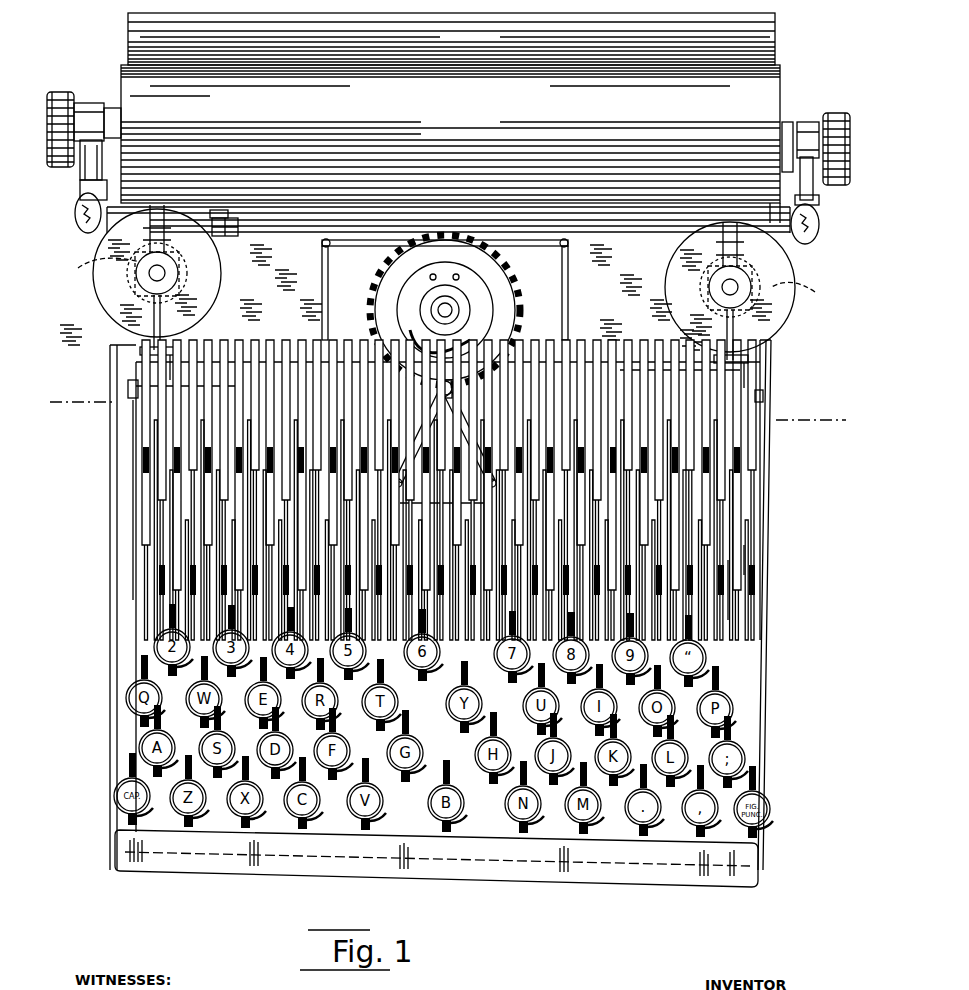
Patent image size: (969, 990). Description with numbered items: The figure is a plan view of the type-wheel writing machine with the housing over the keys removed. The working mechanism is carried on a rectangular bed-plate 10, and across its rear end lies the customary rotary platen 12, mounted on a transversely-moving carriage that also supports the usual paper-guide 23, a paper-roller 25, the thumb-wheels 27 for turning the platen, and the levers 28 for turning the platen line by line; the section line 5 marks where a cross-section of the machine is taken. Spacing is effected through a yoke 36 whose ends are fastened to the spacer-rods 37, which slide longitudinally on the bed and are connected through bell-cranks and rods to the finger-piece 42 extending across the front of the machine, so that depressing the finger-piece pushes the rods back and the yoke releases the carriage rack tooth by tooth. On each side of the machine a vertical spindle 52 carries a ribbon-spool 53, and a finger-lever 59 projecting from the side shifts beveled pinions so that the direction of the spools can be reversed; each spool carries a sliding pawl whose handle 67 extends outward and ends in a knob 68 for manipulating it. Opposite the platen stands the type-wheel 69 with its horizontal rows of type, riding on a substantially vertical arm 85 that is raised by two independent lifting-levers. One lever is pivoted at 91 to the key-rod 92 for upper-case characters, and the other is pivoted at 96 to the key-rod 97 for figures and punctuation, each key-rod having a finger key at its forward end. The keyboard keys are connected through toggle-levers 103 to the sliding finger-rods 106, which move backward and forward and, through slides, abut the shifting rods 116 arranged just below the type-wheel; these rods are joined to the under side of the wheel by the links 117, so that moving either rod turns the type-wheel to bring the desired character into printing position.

The section line 5 is at (443, 412).
The bed-plate 10 is at (768, 746).
The rotary platen 12 is at (773, 100).
The paper-guide 23 is at (776, 48).
The paper-roller 25 is at (800, 248).
The thumb-wheel 27 is at (60, 93).
The lever 28 is at (76, 208).
The yoke 36 is at (562, 250).
The spacer-rod 37 is at (321, 310).
The finger-piece 42 is at (436, 868).
The spindle 52 is at (136, 278).
The ribbon-spool 53 is at (150, 300).
The finger-lever 59 is at (444, 279).
The handle 67 is at (154, 318).
The knob 68 is at (145, 352).
The type-wheel 69 is at (445, 310).
The vertical arm 85 is at (441, 403).
The pivot 91 is at (134, 400).
The key-rod 92 is at (134, 440).
The pivot 96 is at (764, 393).
The key-rod 97 is at (756, 503).
The toggle-lever 103 is at (742, 626).
The sliding finger-rod 106 is at (730, 557).
The shifting rod 116 is at (445, 509).
The link 117 is at (470, 465).